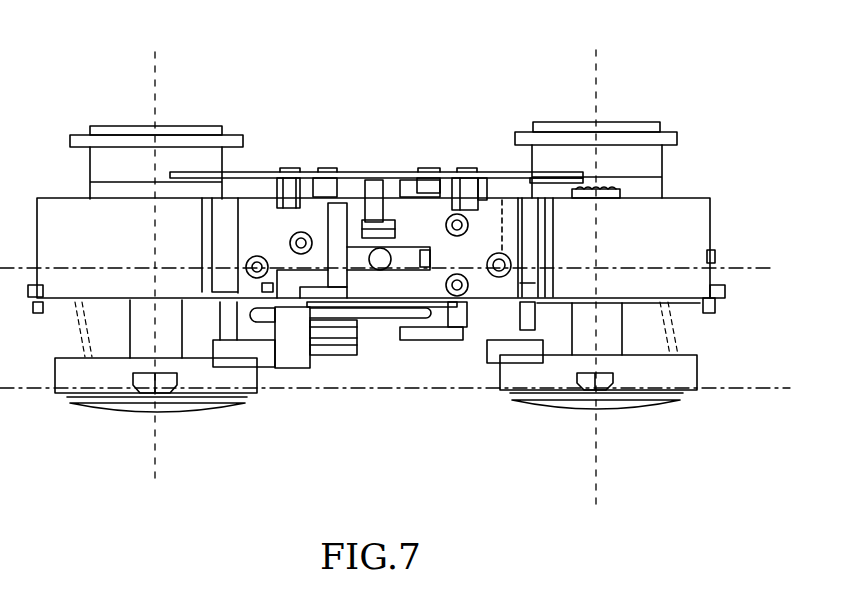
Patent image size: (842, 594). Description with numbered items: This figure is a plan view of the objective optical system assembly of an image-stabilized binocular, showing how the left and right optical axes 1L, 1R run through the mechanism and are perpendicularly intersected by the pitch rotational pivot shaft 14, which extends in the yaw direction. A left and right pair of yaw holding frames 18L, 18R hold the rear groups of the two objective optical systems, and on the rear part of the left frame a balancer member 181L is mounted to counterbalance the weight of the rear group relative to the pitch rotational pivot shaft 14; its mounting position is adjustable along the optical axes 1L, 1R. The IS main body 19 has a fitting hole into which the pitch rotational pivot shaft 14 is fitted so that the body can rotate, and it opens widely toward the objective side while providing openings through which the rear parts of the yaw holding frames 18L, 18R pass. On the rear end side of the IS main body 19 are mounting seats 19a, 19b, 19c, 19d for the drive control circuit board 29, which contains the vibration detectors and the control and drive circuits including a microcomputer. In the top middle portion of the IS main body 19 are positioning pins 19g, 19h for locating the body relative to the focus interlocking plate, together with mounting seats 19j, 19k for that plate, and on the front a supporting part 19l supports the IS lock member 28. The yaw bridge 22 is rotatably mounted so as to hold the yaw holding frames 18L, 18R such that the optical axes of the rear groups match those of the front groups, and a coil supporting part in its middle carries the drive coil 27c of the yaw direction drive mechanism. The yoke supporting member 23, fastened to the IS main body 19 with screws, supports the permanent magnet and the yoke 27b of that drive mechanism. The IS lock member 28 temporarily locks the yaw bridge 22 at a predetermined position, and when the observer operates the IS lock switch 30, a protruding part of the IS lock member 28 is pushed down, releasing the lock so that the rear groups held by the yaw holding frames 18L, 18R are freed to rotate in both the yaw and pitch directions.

The optical axis 1R is at (155, 478).
The optical axis 1L is at (596, 480).
The pitch rotational pivot shaft 14 is at (762, 268).
The yaw holding frame 18R is at (90, 160).
The yaw holding frame 18L is at (662, 158).
The balancer member 181L is at (232, 135).
The IS main body 19 is at (700, 213).
The mounting seat 19a is at (481, 163).
The mounting seat 19b is at (288, 178).
The mounting seat 19c is at (326, 172).
The mounting seat 19d is at (430, 170).
The positioning pin 19g is at (250, 260).
The positioning pin 19h is at (503, 250).
The mounting seat 19j is at (448, 207).
The mounting seat 19k is at (307, 250).
The supporting part 19l is at (466, 293).
The yaw bridge 22 is at (693, 368).
The yoke supporting member 23 is at (460, 312).
The yoke 27b is at (445, 312).
The drive coil 27c is at (418, 318).
The IS lock member 28 is at (290, 368).
The drive control circuit board 29 is at (488, 165).
The IS lock switch 30 is at (385, 197).